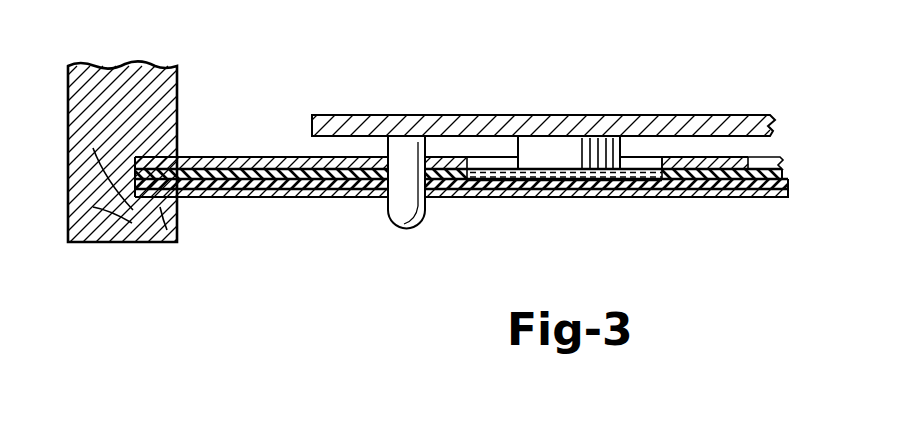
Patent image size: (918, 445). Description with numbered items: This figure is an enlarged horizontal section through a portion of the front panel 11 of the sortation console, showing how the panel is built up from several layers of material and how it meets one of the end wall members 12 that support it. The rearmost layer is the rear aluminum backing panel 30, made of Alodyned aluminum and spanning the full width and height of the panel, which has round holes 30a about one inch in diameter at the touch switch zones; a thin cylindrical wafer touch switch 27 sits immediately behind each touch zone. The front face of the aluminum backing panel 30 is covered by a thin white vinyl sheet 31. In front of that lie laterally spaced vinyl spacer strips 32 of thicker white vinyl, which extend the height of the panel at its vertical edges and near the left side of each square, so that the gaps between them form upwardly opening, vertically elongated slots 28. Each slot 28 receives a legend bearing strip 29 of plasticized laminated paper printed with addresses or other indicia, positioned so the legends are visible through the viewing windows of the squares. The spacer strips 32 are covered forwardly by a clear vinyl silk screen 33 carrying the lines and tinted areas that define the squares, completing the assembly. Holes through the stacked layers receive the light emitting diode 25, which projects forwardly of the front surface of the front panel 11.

The front panel 11 is at (461, 184).
The end wall member 12 is at (172, 64).
The light emitting diode 25 is at (390, 212).
The touch switch 27 is at (562, 150).
The slot 28 is at (653, 198).
The legend bearing strip 29 is at (613, 198).
The rear aluminum backing panel 30 is at (262, 155).
The round hole 30a is at (645, 160).
The white vinyl sheet 31 is at (206, 162).
The vinyl spacer strip 32 is at (226, 184).
The clear vinyl silk screen 33 is at (330, 200).